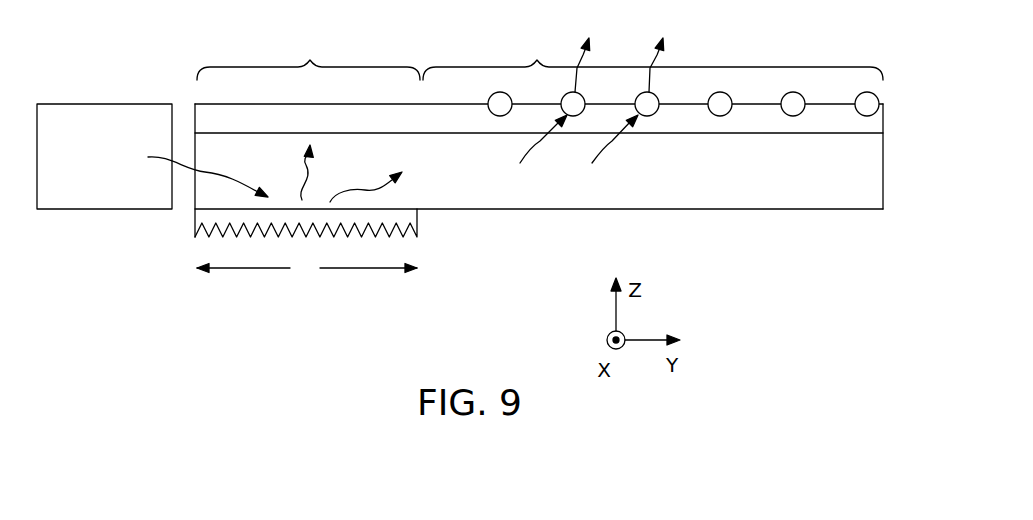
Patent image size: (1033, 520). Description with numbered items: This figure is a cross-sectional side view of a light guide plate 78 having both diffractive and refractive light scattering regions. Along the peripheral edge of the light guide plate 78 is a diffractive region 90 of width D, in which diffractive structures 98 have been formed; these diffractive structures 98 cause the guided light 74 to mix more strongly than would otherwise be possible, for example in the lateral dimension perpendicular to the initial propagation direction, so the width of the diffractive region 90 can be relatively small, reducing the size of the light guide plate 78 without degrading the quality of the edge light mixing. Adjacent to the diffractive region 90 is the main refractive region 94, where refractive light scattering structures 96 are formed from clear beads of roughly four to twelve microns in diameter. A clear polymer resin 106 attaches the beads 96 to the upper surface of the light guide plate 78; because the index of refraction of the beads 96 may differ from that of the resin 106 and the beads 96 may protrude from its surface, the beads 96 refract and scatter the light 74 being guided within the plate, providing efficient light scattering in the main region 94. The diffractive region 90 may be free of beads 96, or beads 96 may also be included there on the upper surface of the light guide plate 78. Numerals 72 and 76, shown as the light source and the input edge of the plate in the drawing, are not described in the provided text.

The light source 72 is at (110, 117).
The light 74 is at (217, 172).
The input edge of waveguide 76 is at (193, 197).
The light guide plate 78 is at (745, 197).
The diffractive region 90 is at (308, 157).
The main (refractive) region 94 is at (653, 74).
The refractive light scattering structures 96 is at (721, 92).
The diffractive structures 98 is at (270, 224).
The resin 106 is at (883, 117).